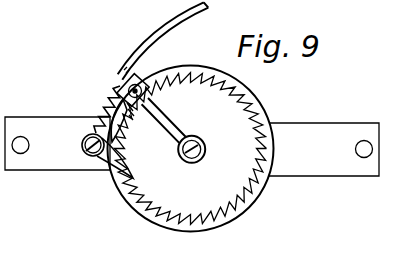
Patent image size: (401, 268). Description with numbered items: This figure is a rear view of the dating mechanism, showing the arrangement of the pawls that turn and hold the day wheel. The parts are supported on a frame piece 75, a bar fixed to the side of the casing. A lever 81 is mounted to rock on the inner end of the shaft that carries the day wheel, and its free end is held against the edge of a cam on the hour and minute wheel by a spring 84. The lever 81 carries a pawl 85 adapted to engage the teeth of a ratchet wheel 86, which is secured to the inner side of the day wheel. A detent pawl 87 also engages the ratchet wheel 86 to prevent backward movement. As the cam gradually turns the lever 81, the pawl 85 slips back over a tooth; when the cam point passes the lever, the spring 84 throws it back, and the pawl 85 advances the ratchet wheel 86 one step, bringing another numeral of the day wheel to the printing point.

The frame piece 75 is at (66, 164).
The lever 81 is at (170, 32).
The spring 84 is at (107, 100).
The pawl 85 is at (123, 135).
The ratchet wheel 86 is at (237, 176).
The detent pawl 87 is at (110, 171).